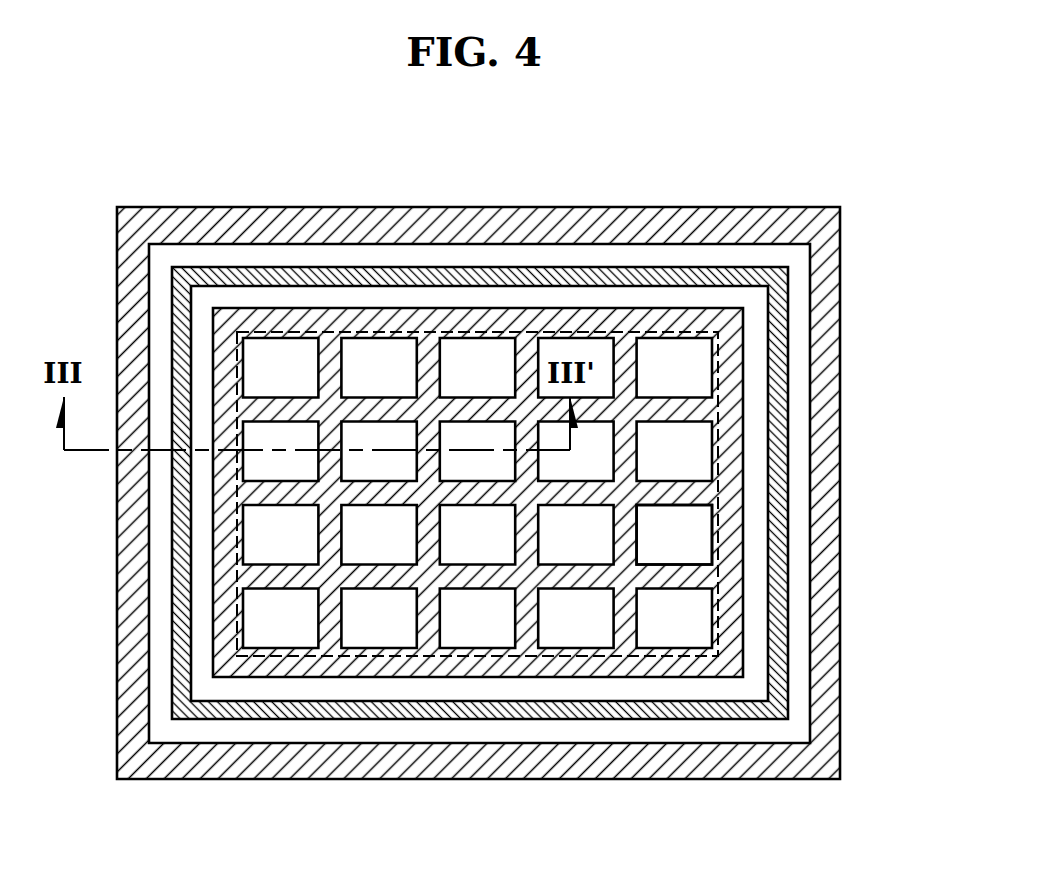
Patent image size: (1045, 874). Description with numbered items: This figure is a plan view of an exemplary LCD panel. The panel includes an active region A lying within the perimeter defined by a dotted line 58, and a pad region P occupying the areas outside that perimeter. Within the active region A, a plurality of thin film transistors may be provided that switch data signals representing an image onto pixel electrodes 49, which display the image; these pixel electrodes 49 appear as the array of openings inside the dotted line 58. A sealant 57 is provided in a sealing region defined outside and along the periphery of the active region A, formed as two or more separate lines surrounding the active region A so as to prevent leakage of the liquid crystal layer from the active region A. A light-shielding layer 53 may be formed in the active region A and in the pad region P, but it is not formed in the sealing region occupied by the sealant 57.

The light-shielding layer 53 is at (720, 433).
The sealant 57 is at (773, 500).
The pixel electrode 49 is at (703, 540).
The dotted line 58 is at (240, 595).
The active region A is at (525, 578).
The pad region P is at (670, 663).